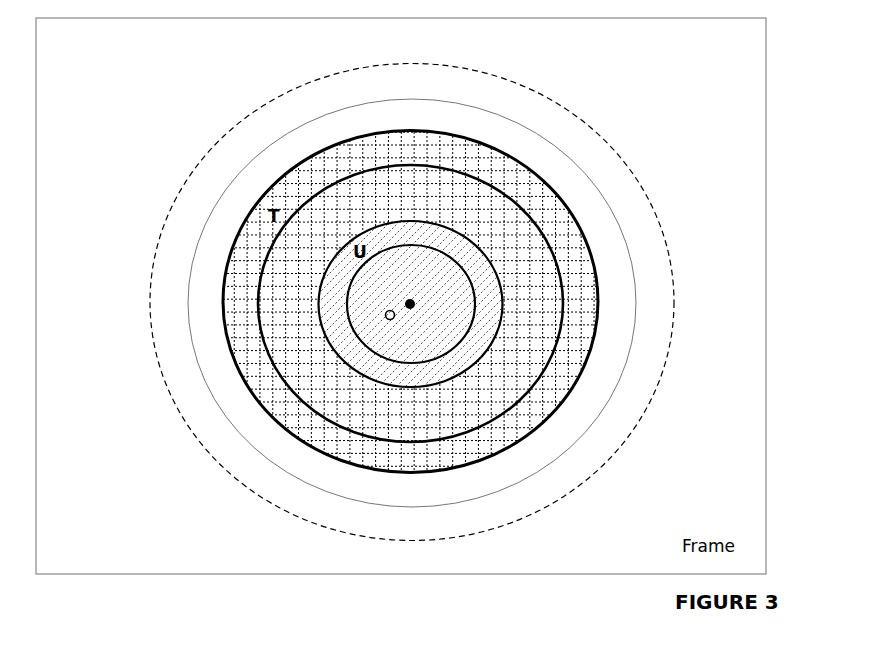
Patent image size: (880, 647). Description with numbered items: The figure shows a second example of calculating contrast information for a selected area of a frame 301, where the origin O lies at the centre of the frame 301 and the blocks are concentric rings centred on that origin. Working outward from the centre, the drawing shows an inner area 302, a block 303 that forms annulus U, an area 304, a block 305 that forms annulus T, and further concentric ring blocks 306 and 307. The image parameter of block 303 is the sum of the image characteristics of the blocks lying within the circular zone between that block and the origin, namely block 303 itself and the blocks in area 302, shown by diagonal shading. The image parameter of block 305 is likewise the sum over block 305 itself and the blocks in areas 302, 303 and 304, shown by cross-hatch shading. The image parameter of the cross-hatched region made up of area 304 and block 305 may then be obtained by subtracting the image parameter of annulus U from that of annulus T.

The frame 301 is at (401, 296).
The area 302 is at (411, 304).
The block 303 is at (411, 304).
The area 304 is at (410, 303).
The block 305 is at (410, 302).
The block 306 is at (412, 303).
The block 307 is at (412, 303).